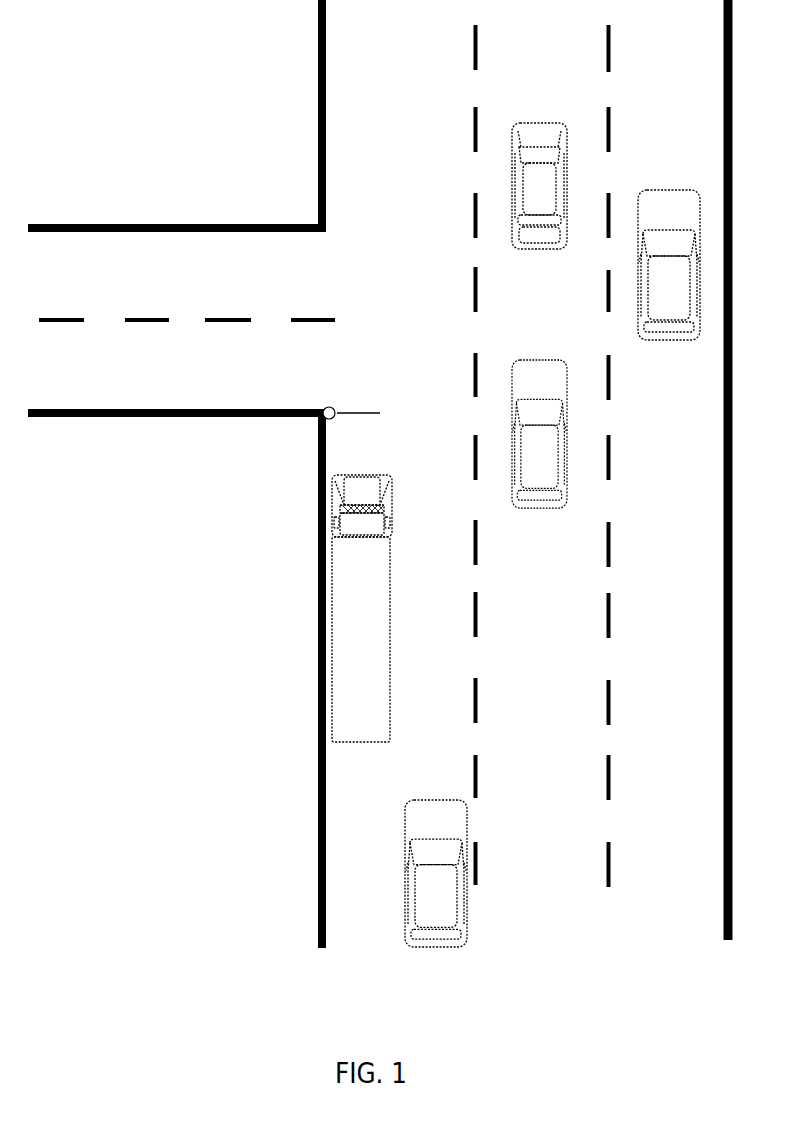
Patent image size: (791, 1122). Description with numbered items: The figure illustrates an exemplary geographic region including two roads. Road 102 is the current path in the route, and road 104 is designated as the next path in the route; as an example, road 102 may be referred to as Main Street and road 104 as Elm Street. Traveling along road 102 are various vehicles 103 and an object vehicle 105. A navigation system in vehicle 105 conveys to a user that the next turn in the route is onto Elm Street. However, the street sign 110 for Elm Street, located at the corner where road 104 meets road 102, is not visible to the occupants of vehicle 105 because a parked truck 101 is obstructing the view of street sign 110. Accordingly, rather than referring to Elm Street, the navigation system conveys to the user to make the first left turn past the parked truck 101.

The parked truck 101 is at (360, 743).
The road 102 is at (300, 34).
The vehicles 103 is at (538, 122).
The road 104 is at (118, 206).
The object vehicle 105 is at (460, 800).
The street sign 110 is at (369, 413).